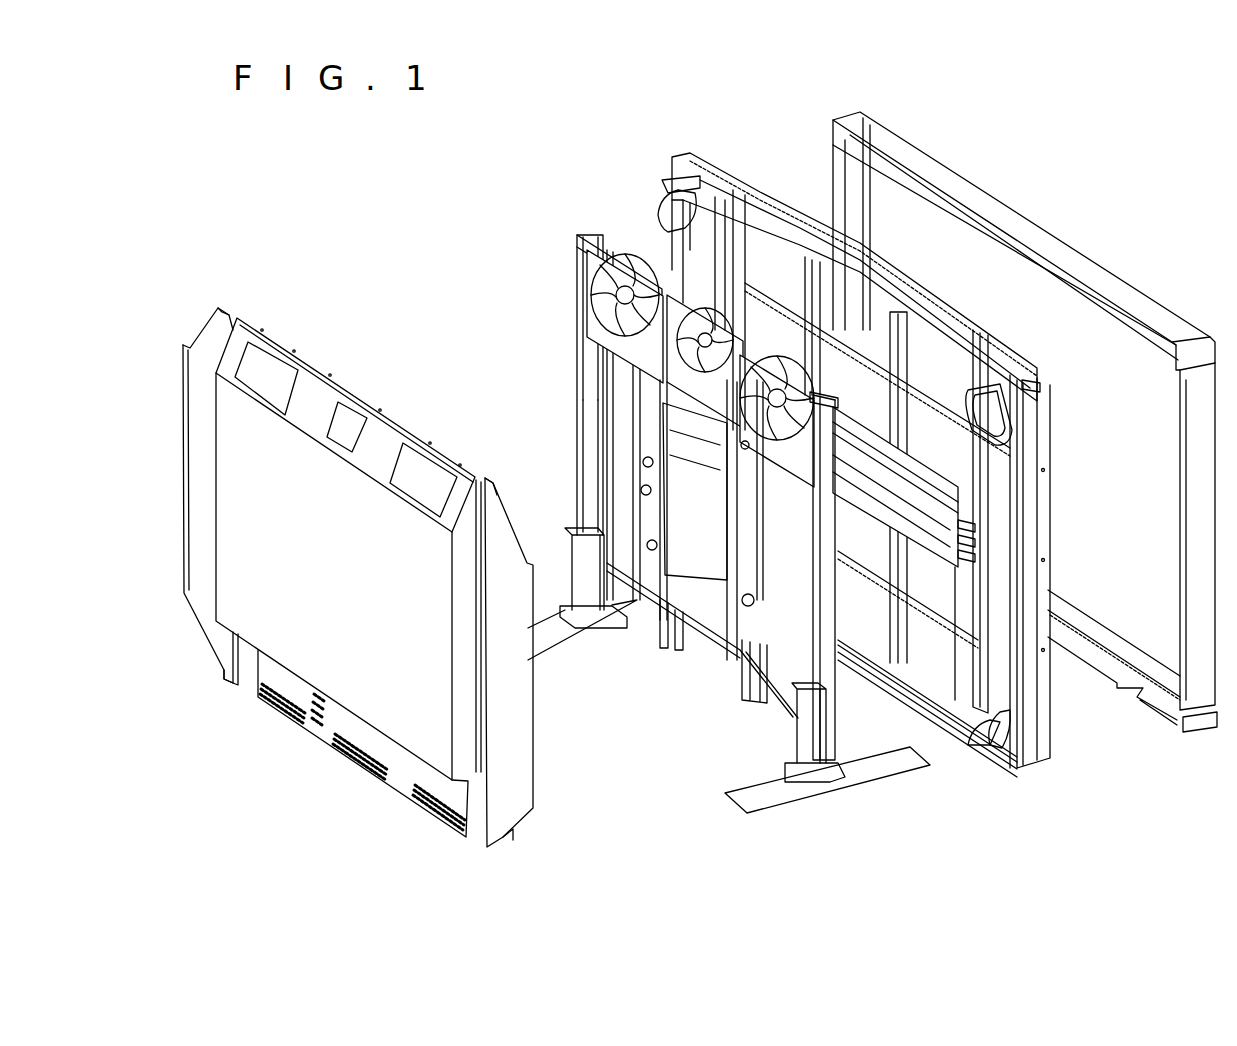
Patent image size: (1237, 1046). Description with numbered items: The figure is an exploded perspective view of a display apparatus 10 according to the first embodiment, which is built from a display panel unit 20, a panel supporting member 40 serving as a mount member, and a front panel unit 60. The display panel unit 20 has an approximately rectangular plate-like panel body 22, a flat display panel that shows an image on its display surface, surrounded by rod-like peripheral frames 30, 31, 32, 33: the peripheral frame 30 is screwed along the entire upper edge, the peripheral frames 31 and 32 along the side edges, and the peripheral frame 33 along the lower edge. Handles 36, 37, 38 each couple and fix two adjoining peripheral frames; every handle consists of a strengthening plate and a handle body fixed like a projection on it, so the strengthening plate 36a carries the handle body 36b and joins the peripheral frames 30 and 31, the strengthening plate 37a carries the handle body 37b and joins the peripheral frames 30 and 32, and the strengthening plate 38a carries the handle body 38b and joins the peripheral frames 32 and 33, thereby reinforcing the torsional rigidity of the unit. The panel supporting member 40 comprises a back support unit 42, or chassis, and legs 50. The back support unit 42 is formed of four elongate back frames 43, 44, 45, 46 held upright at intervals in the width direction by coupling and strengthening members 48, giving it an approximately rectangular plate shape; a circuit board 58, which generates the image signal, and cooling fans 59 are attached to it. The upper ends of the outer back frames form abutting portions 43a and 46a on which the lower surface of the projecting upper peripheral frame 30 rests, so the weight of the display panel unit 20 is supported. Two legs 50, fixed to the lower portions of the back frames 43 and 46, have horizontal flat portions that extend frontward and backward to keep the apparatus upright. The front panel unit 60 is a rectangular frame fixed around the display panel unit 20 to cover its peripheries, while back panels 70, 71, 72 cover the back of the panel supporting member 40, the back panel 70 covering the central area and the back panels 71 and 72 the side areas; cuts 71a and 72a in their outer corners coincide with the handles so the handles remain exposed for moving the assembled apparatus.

The display apparatus 10 is at (455, 182).
The display panel unit 20 is at (695, 155).
The panel body 22 is at (944, 672).
The peripheral frame 30 is at (745, 195).
The peripheral frame 31 is at (655, 248).
The peripheral frame 32 is at (1035, 725).
The peripheral frame 33 is at (893, 687).
The handle 36 is at (554, 205).
The strengthening plate 36a is at (665, 183).
The handle body 36b is at (668, 208).
The handle 37 is at (1095, 320).
The strengthening plate 37a is at (994, 385).
The handle body 37b is at (1035, 385).
The handle 38 is at (1025, 868).
The strengthening plate 38a is at (1006, 745).
The handle body 38b is at (970, 738).
The panel supporting member 40 is at (555, 398).
The back support unit 42 is at (582, 450).
The back frame 43 is at (582, 345).
The abutting portion 43a is at (600, 250).
The back frame 44 is at (660, 630).
The back frame 45 is at (745, 670).
The back frame 46 is at (836, 686).
The abutting portion 46a is at (830, 410).
The coupling and strengthening member 48 is at (718, 632).
The leg 50 is at (590, 637).
The circuit board 58 is at (690, 512).
The cooling fan 59 is at (598, 290).
The front panel unit 60 is at (1005, 212).
The back panel 70 is at (397, 780).
The back panel 71 is at (194, 343).
The cut 71a is at (205, 332).
The back panel 72 is at (512, 800).
The cut 72a is at (502, 513).